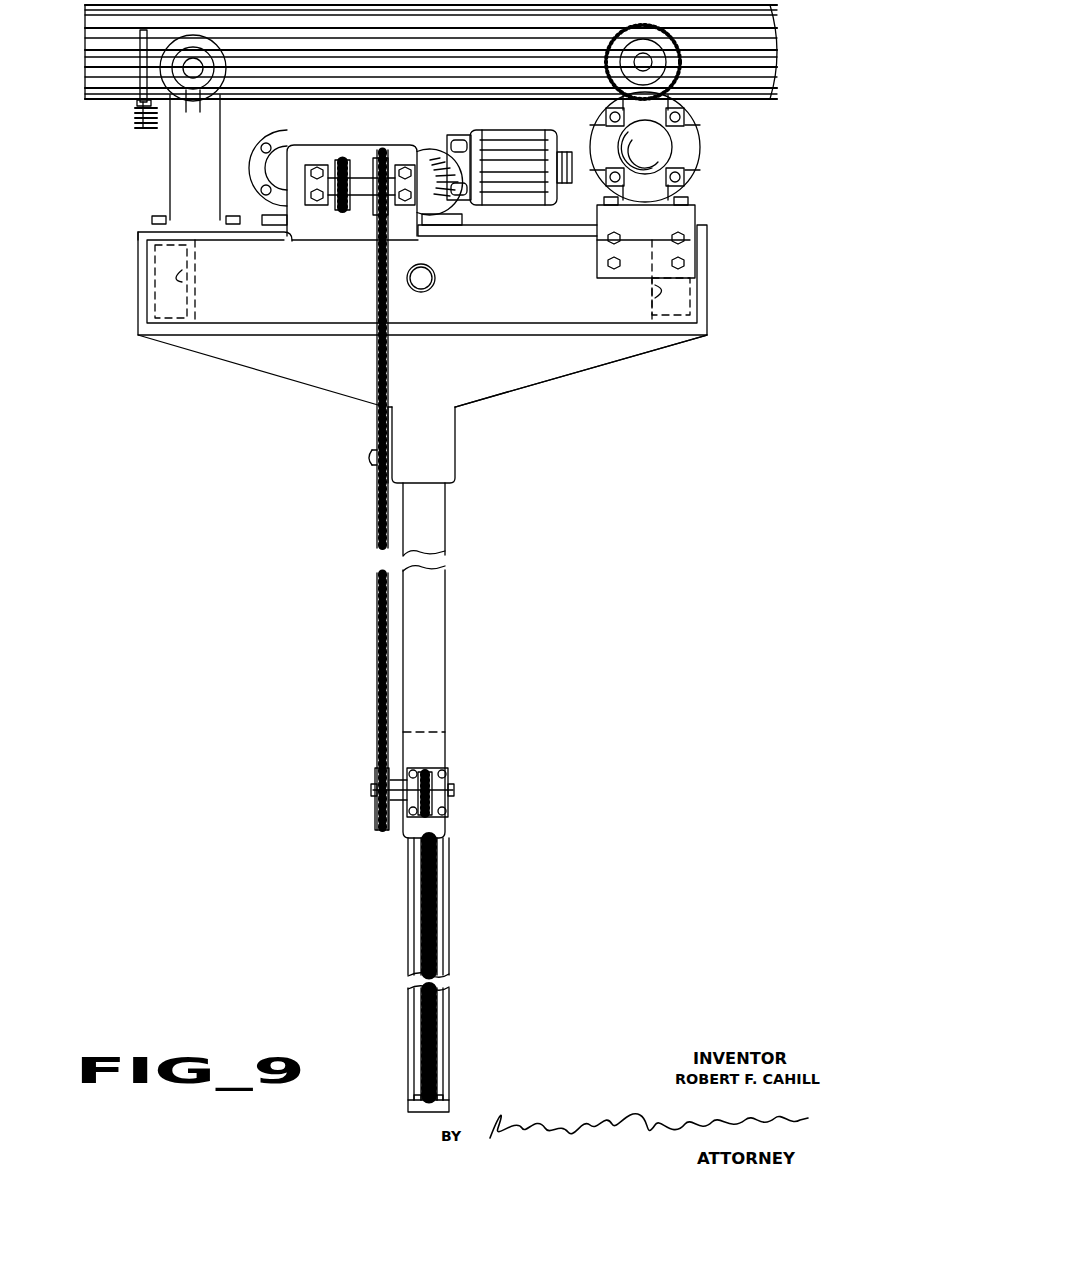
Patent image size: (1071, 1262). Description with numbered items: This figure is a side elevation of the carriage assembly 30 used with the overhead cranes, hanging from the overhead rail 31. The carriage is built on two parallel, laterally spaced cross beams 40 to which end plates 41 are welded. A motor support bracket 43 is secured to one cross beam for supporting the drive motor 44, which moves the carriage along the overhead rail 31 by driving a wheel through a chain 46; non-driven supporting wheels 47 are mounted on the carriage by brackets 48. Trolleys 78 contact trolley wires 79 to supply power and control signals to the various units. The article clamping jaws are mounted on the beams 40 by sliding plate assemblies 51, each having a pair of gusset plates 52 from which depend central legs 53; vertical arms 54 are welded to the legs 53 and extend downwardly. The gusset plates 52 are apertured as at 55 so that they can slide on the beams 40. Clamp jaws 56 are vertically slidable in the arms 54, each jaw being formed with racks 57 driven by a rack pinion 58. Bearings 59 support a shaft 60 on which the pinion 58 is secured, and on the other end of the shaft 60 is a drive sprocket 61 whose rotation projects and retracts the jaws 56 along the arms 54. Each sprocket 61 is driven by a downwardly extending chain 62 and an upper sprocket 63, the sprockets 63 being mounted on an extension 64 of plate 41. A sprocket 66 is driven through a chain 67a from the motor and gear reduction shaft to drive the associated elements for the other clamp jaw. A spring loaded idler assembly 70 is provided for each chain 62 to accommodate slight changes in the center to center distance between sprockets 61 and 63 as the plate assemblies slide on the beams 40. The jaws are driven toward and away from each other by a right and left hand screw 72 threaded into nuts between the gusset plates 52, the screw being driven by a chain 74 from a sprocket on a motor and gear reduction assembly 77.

The carriage assembly 30 is at (133, 236).
The overhead rail 31 is at (85, 104).
The cross beams 40 is at (195, 308).
The end plates 41 is at (332, 295).
The motor support bracket 43 is at (660, 228).
The drive motor 44 is at (692, 143).
The chain 46 is at (680, 85).
The supporting wheels 47 is at (222, 70).
The brackets 48 is at (207, 167).
The sliding plate assemblies 51 is at (548, 388).
The gusset plates 52 is at (451, 378).
The central legs 53 is at (436, 459).
The vertical arms 54 is at (438, 536).
The apertures 55 is at (195, 281).
The clamp jaws 56 is at (448, 938).
The racks 57 is at (421, 930).
The rack pinion 58 is at (428, 770).
The bearings 59 is at (440, 785).
The shaft 60 is at (371, 790).
The drive sprocket 61 is at (375, 806).
The chain 62 is at (375, 520).
The upper sprocket 63 is at (362, 210).
The extension 64 is at (388, 142).
The sprocket 66 is at (320, 206).
The chain 67a is at (360, 165).
The spring loaded idler assembly 70 is at (366, 457).
The right and left hand screw 72 is at (428, 272).
The chain 74 is at (460, 206).
The motor and gear reduction assembly 77 is at (505, 146).
The trolley 78 is at (140, 36).
The trolley wires 79 is at (88, 30).